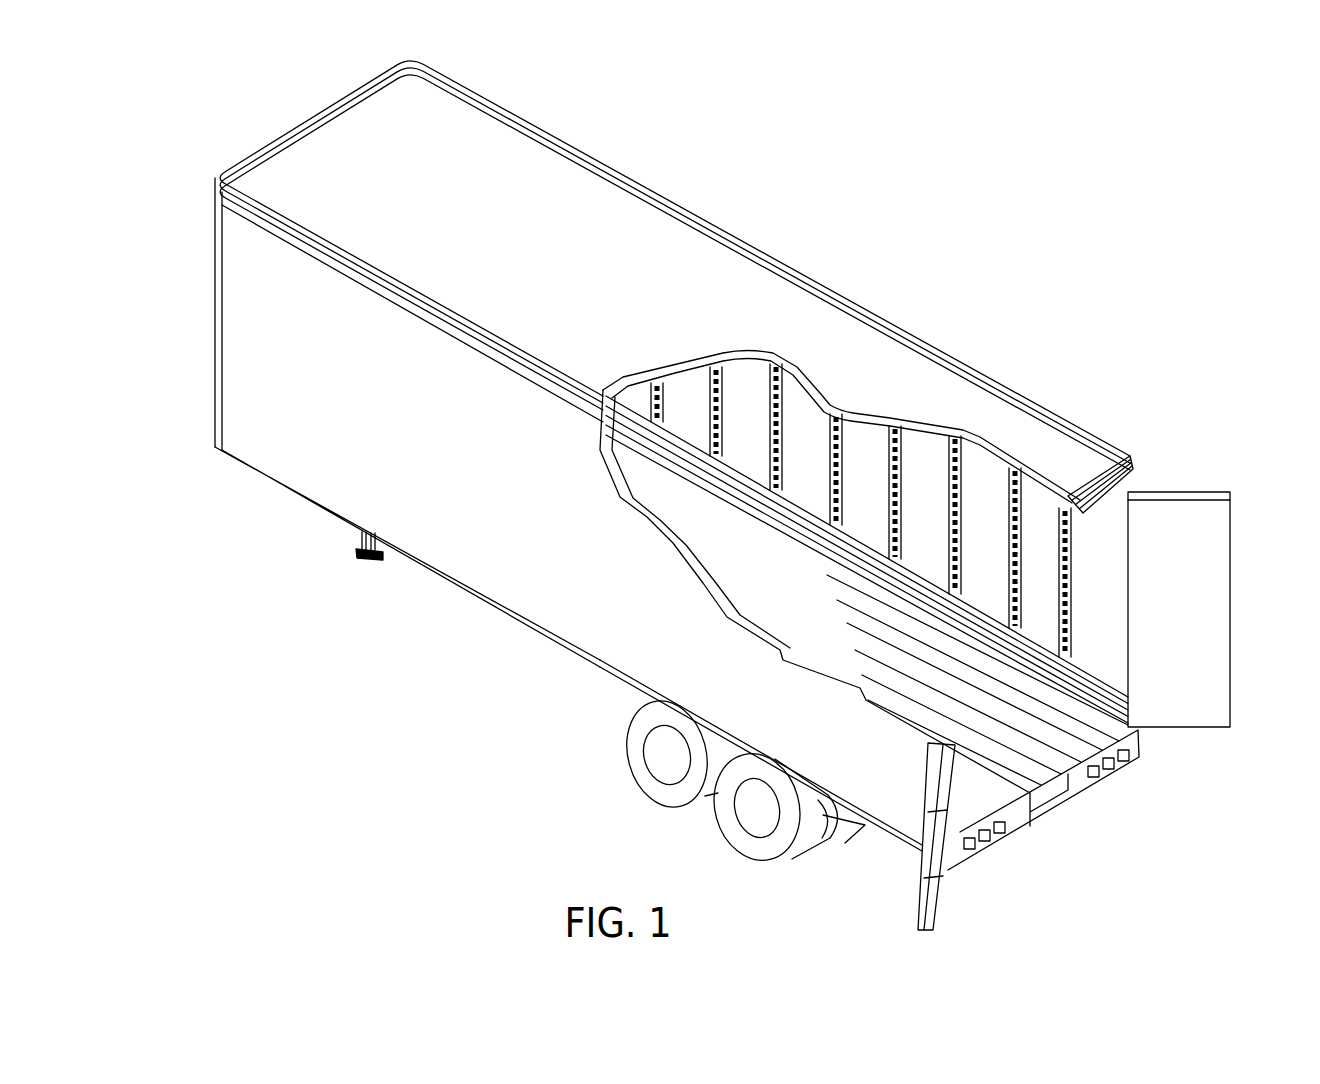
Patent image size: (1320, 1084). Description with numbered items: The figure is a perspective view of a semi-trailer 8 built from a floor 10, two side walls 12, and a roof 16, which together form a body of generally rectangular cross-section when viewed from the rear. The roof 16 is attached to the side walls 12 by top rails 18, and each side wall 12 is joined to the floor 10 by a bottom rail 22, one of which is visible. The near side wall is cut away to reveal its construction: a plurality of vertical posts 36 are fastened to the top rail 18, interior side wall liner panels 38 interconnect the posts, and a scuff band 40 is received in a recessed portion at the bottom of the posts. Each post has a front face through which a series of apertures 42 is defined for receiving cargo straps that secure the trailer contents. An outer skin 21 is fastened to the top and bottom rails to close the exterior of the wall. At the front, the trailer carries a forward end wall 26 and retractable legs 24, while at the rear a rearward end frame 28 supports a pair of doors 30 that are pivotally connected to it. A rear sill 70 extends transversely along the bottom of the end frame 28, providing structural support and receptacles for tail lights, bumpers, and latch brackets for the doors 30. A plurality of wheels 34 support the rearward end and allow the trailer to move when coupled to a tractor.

The trailer 8 is at (892, 211).
The floor 10 is at (1033, 782).
The side wall 12 is at (601, 640).
The roof 16 is at (455, 140).
The top rail 18 is at (620, 166).
The outer skin 21 is at (497, 487).
The bottom rail 22 is at (240, 462).
The retractable legs 24 is at (355, 543).
The forward end wall 26 is at (182, 324).
The rearward end frame 28 is at (1133, 483).
The door 30 is at (1230, 595).
The wheels 34 is at (660, 792).
The vertical post 36 is at (1075, 552).
The interior side wall liner panel 38 is at (800, 461).
The scuff band 40 is at (1086, 662).
The apertures 42 is at (957, 500).
The rear sill 70 is at (1080, 782).